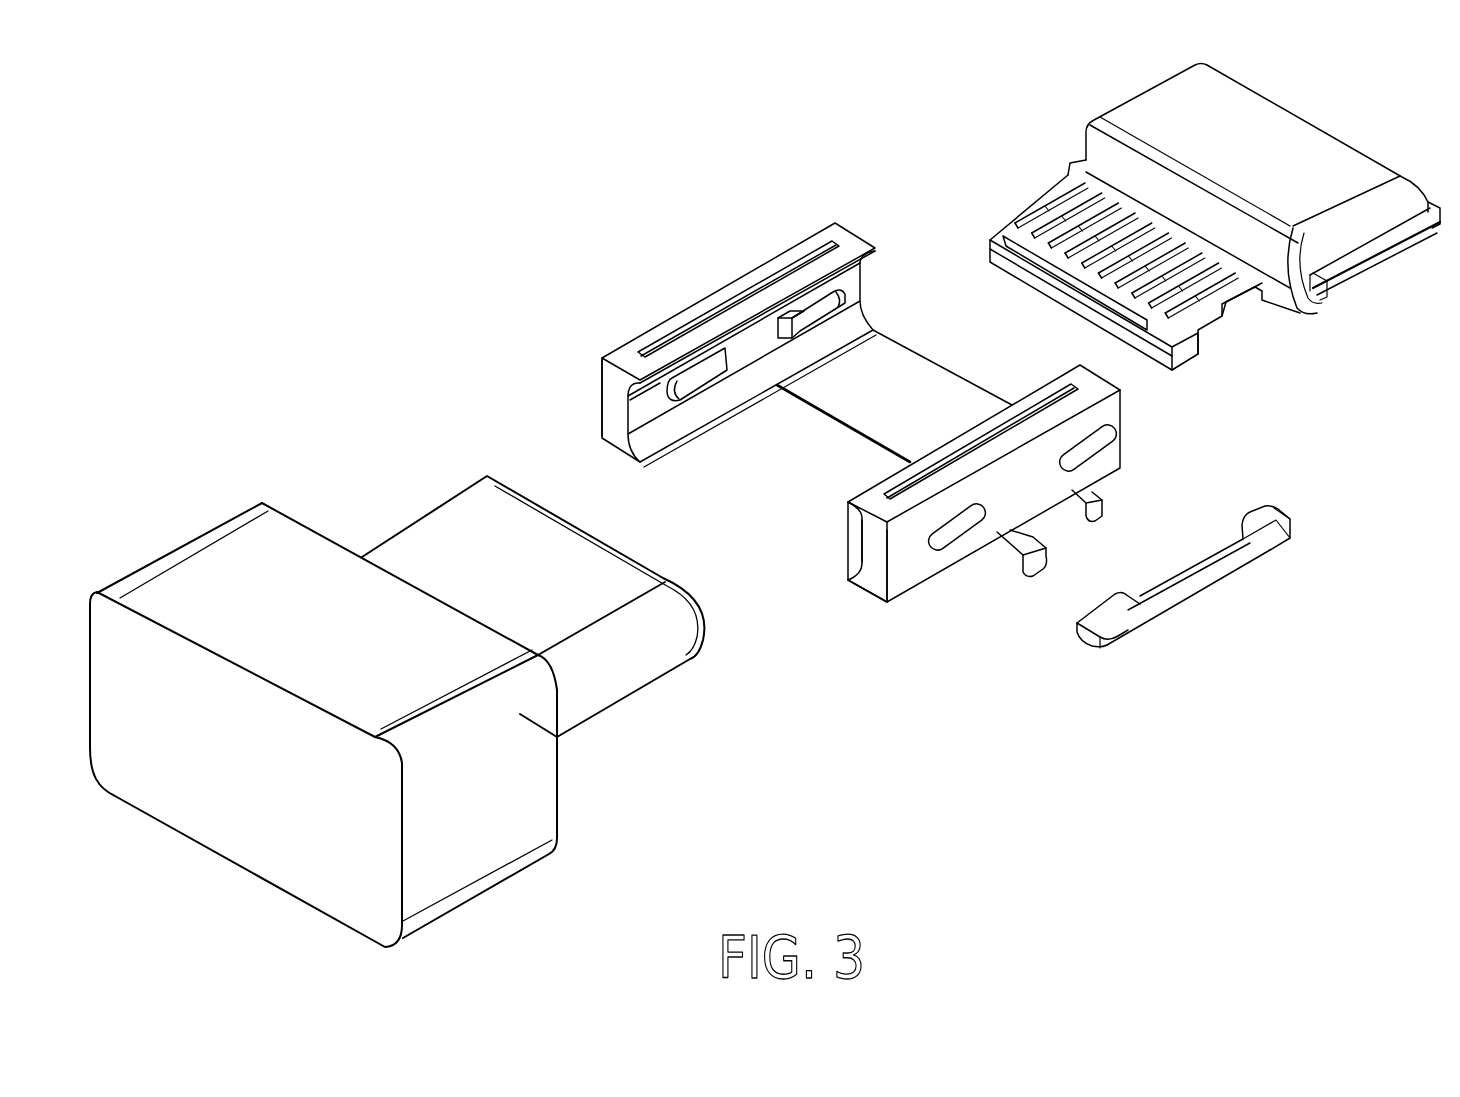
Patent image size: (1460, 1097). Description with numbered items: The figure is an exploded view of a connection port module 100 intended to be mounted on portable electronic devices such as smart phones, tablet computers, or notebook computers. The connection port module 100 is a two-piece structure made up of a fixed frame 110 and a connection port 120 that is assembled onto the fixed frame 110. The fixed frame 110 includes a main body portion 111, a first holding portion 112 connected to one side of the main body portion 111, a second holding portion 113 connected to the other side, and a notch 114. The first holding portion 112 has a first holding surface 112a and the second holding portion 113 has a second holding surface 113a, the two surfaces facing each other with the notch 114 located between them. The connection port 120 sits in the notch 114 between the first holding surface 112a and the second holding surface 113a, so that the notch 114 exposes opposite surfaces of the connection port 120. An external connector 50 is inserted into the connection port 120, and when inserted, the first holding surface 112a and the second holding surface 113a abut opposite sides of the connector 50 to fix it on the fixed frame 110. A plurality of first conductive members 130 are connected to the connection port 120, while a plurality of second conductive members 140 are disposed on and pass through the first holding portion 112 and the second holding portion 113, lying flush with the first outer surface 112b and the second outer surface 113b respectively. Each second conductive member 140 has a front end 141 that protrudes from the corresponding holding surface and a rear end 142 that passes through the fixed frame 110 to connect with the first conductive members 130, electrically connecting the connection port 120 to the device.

The connector 50 is at (457, 544).
The connection port module 100 is at (575, 250).
The fixed frame 110 is at (942, 342).
The main body portion 111 is at (857, 398).
The first holding portion 112 is at (847, 242).
The first holding surface 112a is at (650, 404).
The first outer surface 112b is at (598, 400).
The second holding portion 113 is at (1093, 387).
The second holding surface 113a is at (856, 537).
The second outer surface 113b is at (908, 553).
The notch 114 is at (832, 490).
The connection port 120 is at (1368, 133).
The first conductive members 130 is at (1370, 257).
The second conductive members 140 is at (978, 442).
The front end 141 is at (707, 377).
The rear end 142 is at (810, 317).